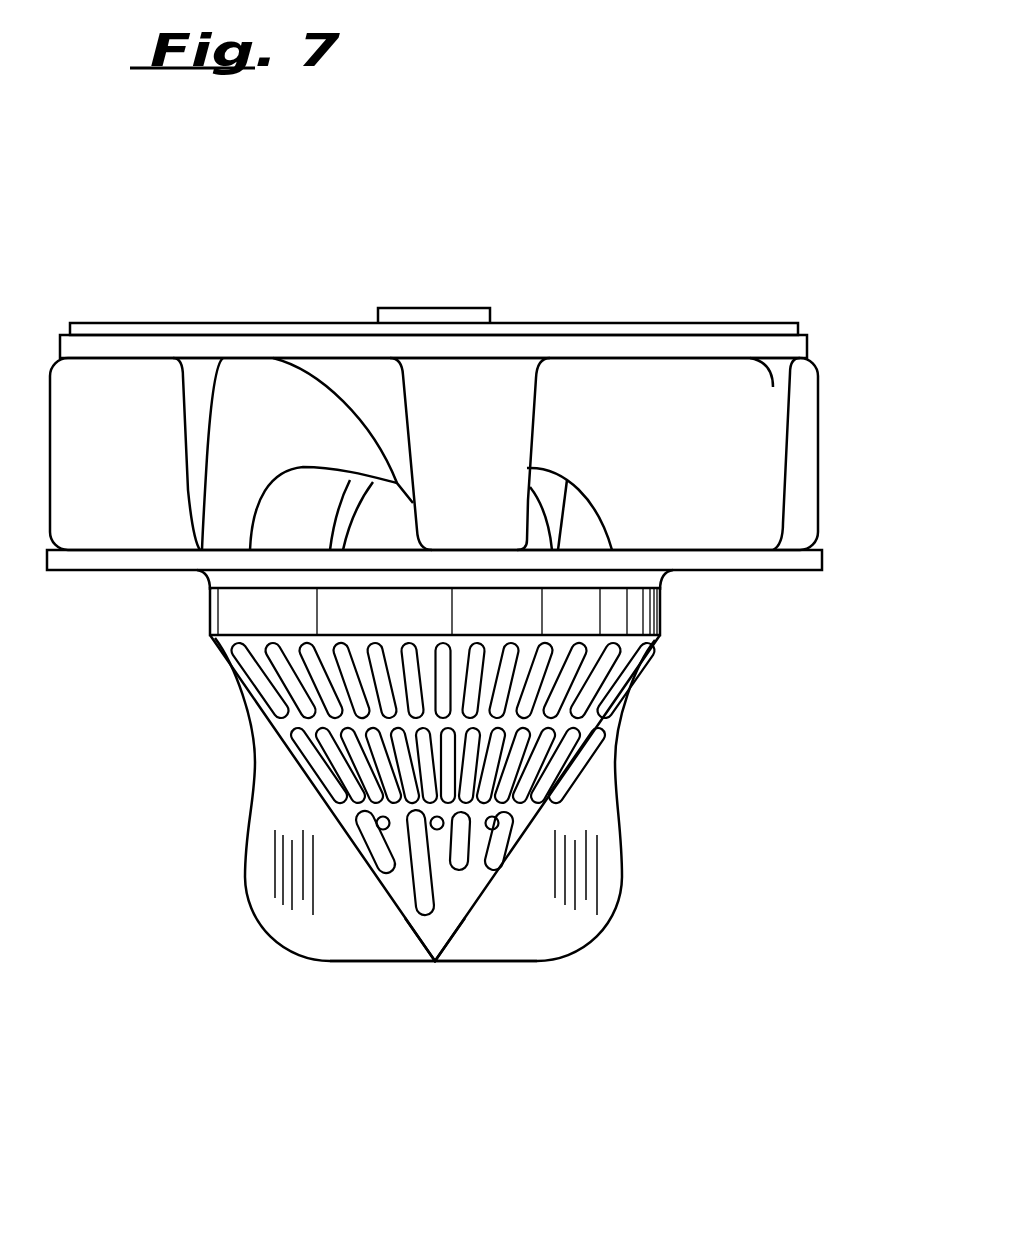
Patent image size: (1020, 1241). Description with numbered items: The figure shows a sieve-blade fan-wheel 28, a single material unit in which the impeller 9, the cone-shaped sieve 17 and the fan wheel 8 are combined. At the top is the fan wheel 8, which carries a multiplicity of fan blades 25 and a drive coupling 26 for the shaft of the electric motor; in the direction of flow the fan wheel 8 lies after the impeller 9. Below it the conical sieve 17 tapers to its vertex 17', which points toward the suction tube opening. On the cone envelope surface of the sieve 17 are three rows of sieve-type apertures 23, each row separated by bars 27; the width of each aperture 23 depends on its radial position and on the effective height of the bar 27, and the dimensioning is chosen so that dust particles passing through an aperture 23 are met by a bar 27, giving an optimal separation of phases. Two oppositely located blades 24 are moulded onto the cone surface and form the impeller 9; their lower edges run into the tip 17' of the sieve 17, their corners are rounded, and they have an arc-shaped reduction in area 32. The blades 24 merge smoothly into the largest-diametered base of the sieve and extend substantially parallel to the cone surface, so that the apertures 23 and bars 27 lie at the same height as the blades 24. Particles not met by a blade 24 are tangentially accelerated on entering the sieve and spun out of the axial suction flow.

The sieve-blade fan-wheel 28 is at (112, 262).
The drive coupling 26 is at (385, 318).
The fan wheel 8 is at (570, 390).
The fan blades 25 is at (695, 433).
The bars 27 is at (540, 673).
The sieve 17 is at (556, 798).
The apertures 23 is at (500, 840).
The arc-shaped reduction in area 32 is at (253, 766).
The blades 24 is at (613, 857).
The impeller 9 is at (408, 948).
The vertex 17' is at (496, 1003).